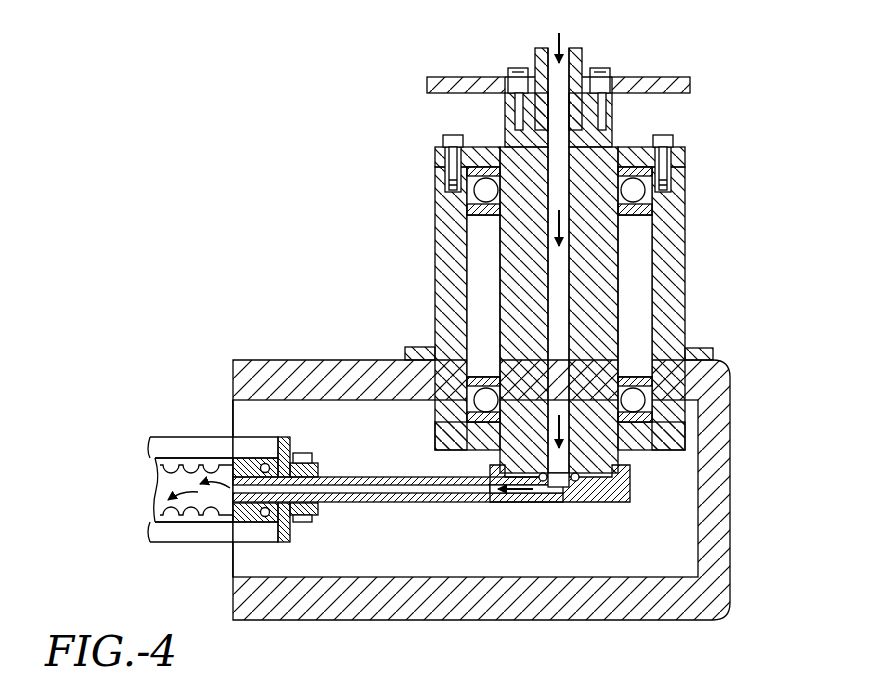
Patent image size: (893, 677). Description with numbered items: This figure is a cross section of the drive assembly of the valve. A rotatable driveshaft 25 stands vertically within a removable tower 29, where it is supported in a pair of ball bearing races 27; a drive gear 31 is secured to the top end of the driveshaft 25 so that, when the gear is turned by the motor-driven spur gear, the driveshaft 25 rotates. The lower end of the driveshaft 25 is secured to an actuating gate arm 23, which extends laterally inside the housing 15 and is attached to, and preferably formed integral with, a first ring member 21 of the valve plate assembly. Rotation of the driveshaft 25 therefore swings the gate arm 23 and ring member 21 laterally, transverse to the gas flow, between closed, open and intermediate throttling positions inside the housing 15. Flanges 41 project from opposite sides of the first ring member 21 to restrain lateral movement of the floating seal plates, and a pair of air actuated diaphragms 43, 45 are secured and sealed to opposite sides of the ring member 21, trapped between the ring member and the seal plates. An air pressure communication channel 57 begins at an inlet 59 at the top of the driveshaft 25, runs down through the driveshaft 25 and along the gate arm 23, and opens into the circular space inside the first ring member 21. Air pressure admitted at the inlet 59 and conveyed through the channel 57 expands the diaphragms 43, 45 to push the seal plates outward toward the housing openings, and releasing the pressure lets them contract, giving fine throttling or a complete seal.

The housing 15 is at (732, 474).
The first ring member 21 is at (248, 512).
The actuating gate arm 23 is at (387, 502).
The rotatable driveshaft 25 is at (622, 280).
The ball bearing races 27 is at (640, 200).
The removable tower 29 is at (436, 255).
The drive gear 31 is at (660, 76).
The flanges 41 is at (288, 438).
The air actuated diaphragm 43 is at (160, 470).
The air actuated diaphragm 45 is at (162, 508).
The air pressure communication channel 57 is at (558, 167).
The inlet 59 is at (563, 47).